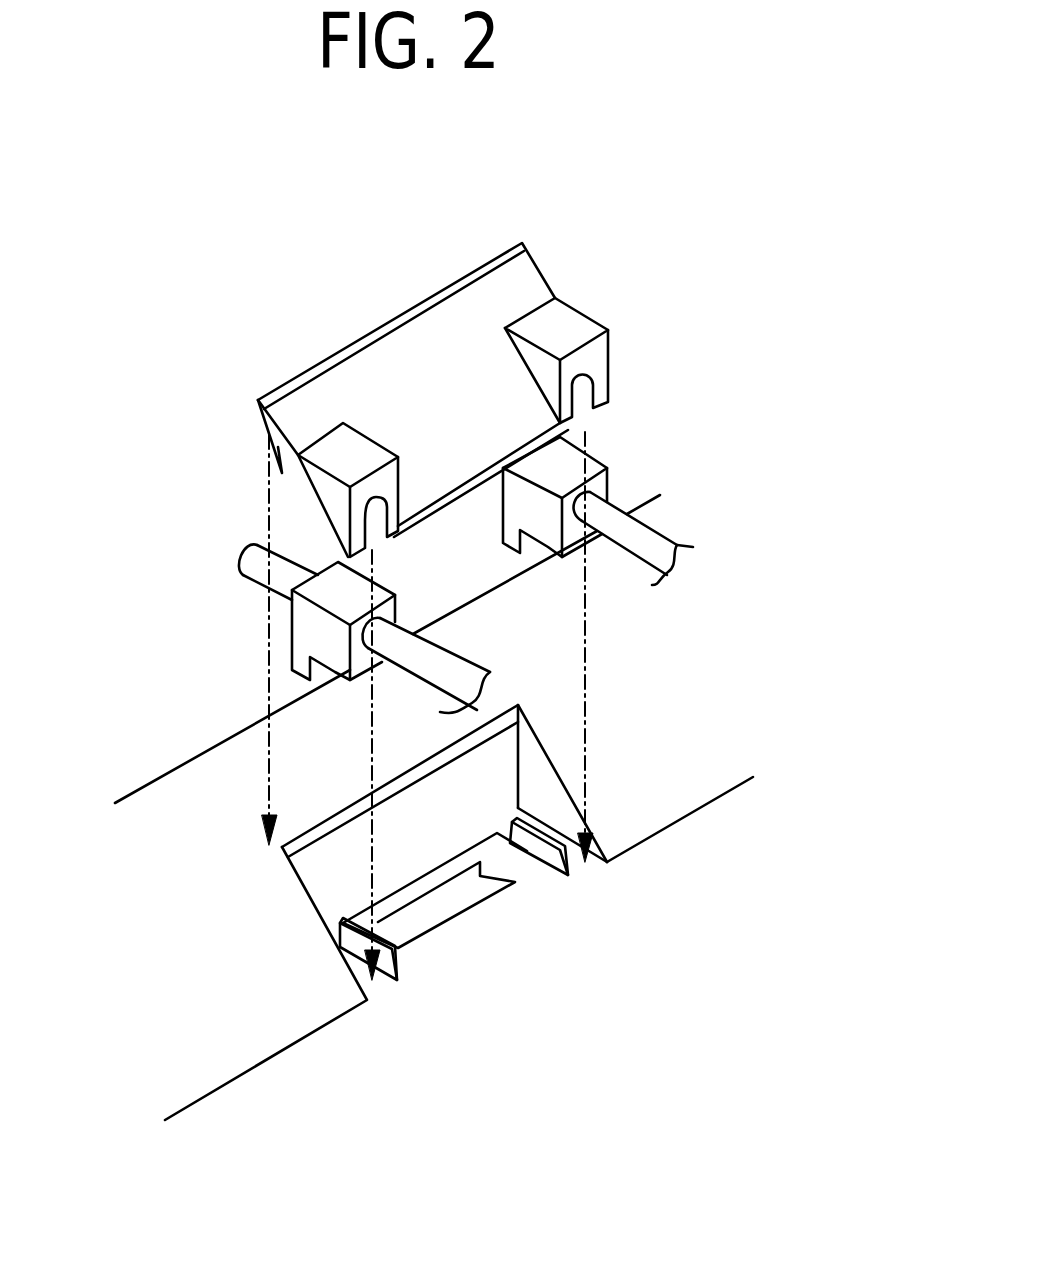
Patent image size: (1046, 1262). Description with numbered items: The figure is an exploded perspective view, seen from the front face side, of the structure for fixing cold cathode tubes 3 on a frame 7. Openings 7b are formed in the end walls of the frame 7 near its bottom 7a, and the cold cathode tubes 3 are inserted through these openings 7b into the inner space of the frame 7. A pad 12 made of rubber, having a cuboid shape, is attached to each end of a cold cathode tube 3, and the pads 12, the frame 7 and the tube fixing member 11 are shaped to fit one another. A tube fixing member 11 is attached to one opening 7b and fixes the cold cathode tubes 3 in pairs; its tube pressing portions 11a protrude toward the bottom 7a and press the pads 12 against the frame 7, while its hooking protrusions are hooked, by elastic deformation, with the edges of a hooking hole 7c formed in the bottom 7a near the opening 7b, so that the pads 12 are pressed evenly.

The cold cathode tube 3 is at (670, 543).
The frame 7 is at (205, 800).
The bottom 7a is at (533, 1003).
The opening 7b is at (335, 850).
The hooking hole 7c is at (437, 913).
The tube fixing member 11 is at (408, 338).
The tube pressing portion 11a is at (590, 357).
The pad 12 is at (600, 460).